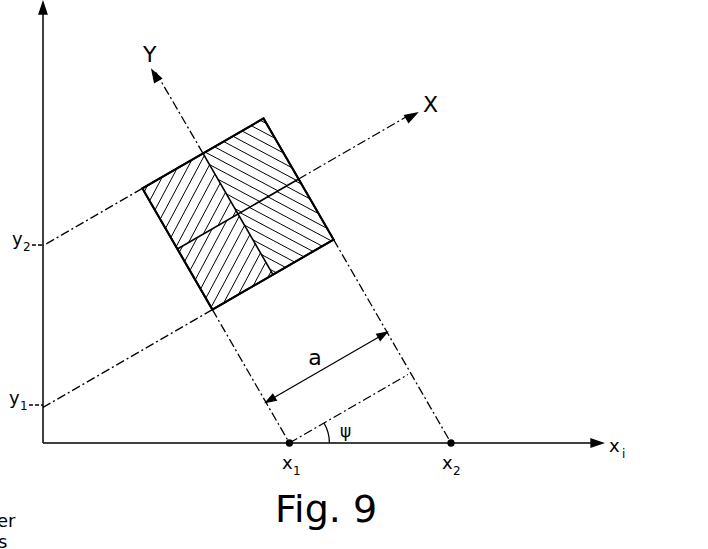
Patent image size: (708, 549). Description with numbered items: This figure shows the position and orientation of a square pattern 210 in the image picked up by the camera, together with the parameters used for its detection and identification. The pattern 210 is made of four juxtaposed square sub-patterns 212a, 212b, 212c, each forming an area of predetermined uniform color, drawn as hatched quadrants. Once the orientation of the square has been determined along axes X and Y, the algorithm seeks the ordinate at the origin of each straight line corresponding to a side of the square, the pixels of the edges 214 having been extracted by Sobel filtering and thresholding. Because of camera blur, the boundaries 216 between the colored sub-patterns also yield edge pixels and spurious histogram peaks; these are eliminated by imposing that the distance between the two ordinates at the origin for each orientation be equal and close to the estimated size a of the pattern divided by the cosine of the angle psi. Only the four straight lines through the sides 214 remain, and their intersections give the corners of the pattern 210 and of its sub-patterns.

The pattern 210 is at (290, 75).
The edges 214 is at (231, 138).
The boundaries 216 is at (268, 198).
The square sub-pattern 212a is at (273, 143).
The square sub-pattern 212b is at (175, 220).
The square sub-pattern 212c is at (334, 231).